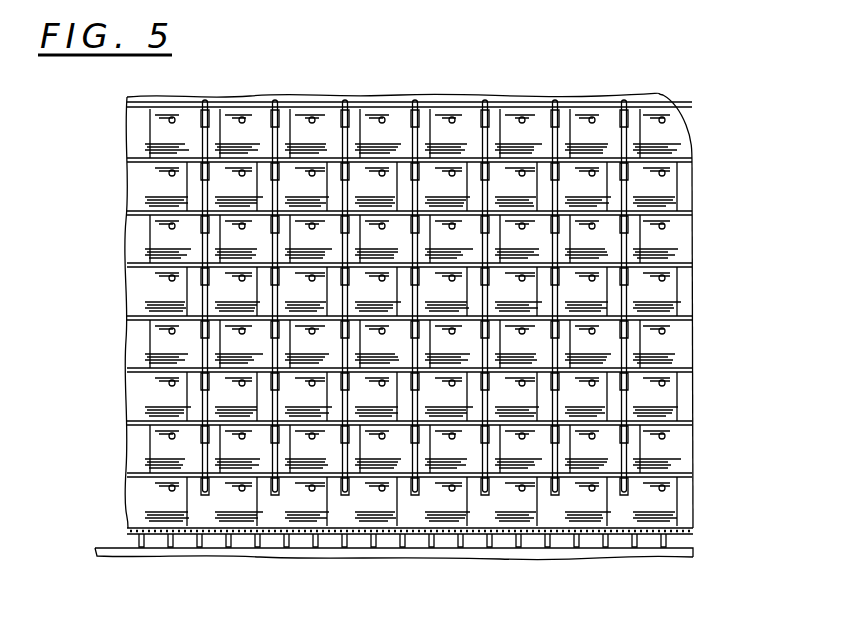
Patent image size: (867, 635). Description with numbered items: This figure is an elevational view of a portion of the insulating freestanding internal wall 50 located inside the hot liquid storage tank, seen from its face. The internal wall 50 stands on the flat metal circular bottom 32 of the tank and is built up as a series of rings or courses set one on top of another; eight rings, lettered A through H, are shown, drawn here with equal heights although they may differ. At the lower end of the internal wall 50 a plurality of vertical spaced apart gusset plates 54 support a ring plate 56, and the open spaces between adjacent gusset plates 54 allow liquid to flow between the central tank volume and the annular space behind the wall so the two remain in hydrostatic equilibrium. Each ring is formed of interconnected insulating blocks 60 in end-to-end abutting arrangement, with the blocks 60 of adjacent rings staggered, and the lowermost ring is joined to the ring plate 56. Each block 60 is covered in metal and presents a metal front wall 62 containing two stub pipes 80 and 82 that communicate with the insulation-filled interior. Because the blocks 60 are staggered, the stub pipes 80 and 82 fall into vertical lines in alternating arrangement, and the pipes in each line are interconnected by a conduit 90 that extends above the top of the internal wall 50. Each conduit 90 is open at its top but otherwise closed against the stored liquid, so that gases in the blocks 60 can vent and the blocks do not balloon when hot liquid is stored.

The bottom 32 is at (599, 548).
The internal wall 50 is at (118, 290).
The gusset plates 54 is at (200, 537).
The ring plate 56 is at (321, 536).
The insulating blocks 60 is at (541, 101).
The front wall 62 is at (334, 251).
The stub pipe 80 is at (310, 175).
The stub pipe 82 is at (589, 174).
The conduit 90 is at (280, 135).